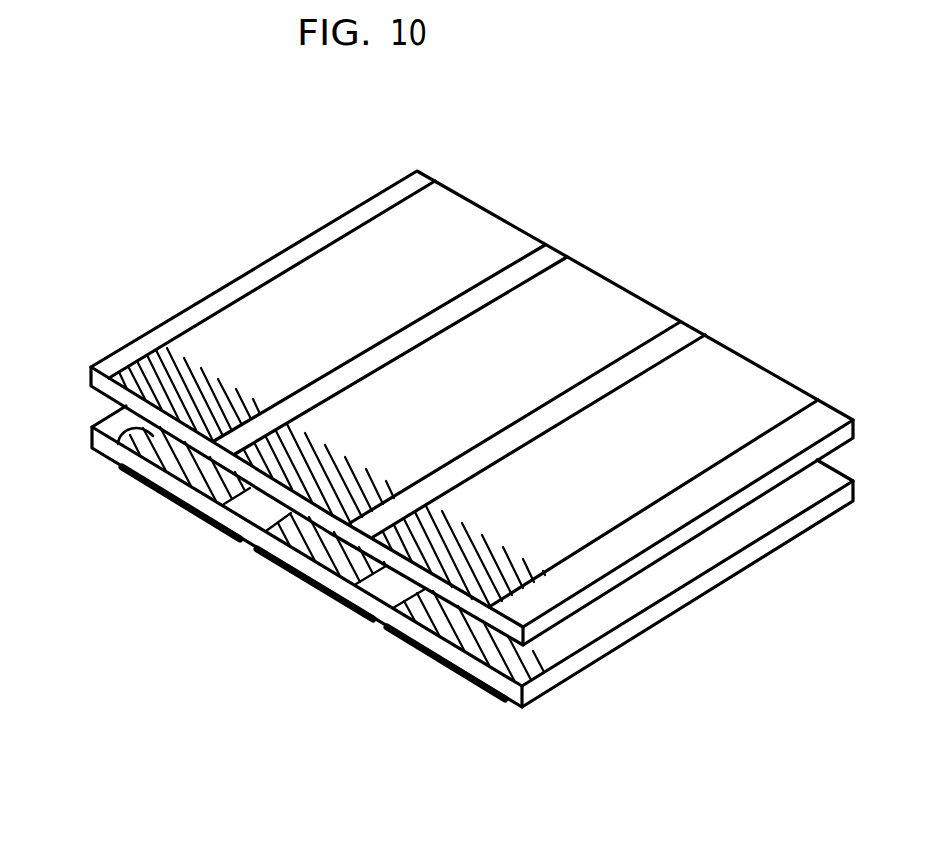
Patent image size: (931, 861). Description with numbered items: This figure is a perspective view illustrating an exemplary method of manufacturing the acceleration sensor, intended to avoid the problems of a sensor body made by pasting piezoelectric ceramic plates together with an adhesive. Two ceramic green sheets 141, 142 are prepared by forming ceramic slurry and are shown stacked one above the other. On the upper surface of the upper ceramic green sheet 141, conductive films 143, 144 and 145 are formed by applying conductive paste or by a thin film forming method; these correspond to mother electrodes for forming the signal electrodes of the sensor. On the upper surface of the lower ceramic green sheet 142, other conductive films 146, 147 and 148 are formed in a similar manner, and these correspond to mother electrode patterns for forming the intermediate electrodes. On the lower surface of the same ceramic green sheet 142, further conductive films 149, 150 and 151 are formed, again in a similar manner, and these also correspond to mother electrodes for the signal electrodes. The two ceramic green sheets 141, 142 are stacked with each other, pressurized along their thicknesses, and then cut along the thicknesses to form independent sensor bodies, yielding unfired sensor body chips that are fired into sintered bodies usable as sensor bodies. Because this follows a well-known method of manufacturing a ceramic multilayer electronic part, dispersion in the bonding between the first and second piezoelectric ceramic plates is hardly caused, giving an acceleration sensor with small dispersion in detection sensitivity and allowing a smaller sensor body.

The ceramic green sheet 141 is at (119, 347).
The ceramic green sheet 142 is at (120, 408).
The conductive film 143 is at (217, 332).
The conductive film 144 is at (608, 300).
The conductive film 145 is at (717, 373).
The conductive film 146 is at (112, 450).
The conductive film 147 is at (330, 560).
The conductive film 148 is at (458, 618).
The conductive film 149 is at (175, 502).
The conductive film 150 is at (283, 568).
The conductive film 151 is at (430, 653).